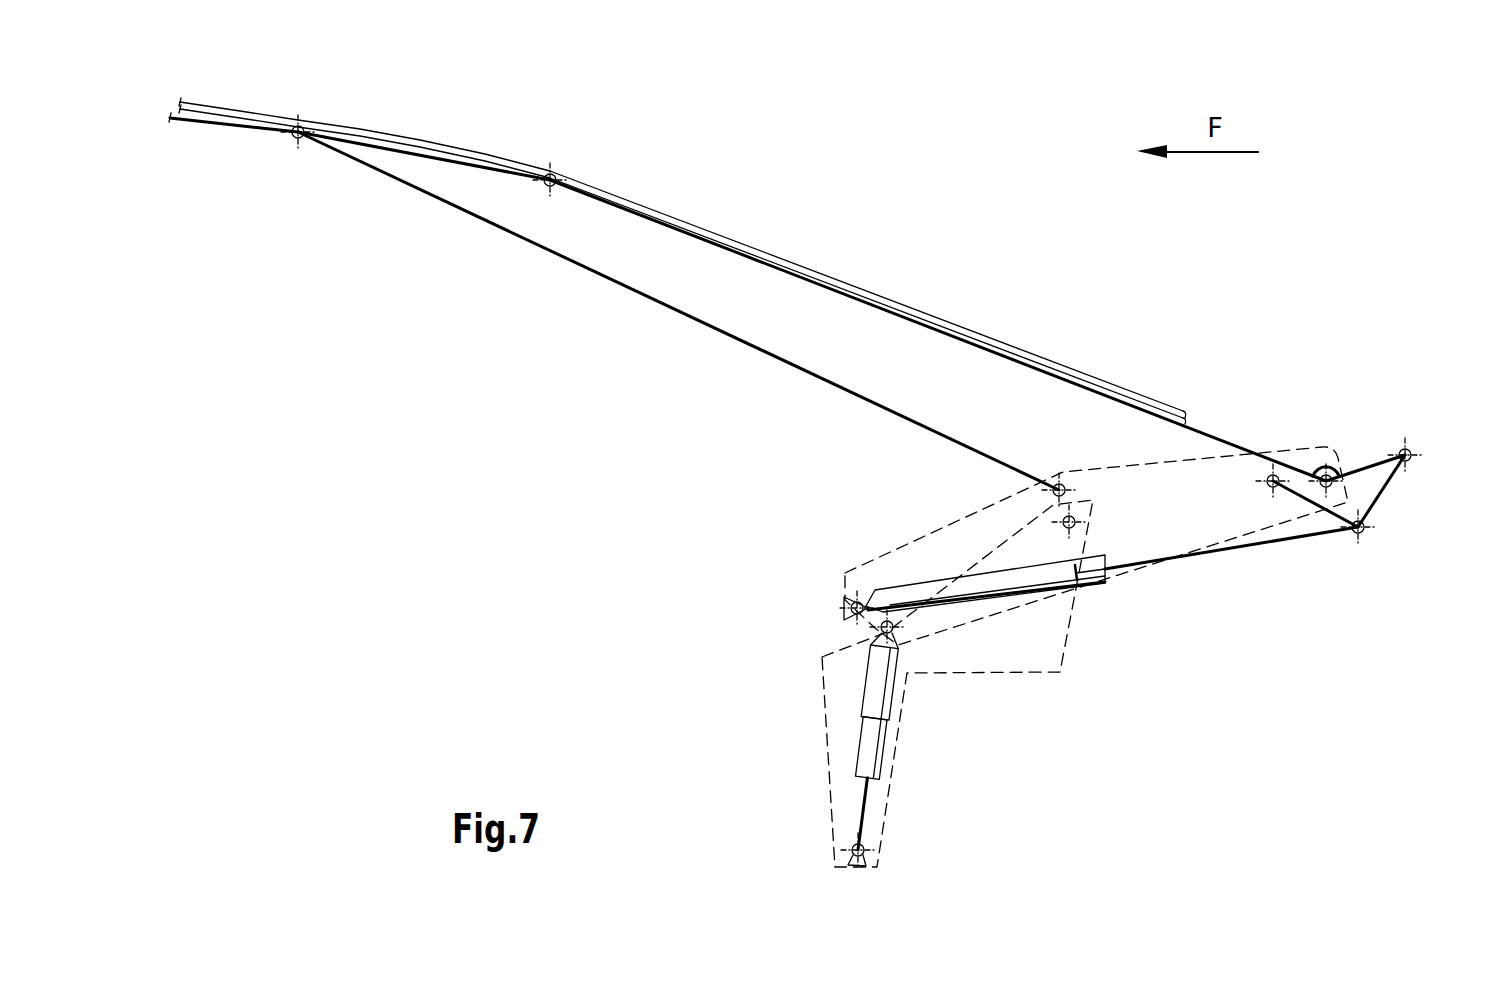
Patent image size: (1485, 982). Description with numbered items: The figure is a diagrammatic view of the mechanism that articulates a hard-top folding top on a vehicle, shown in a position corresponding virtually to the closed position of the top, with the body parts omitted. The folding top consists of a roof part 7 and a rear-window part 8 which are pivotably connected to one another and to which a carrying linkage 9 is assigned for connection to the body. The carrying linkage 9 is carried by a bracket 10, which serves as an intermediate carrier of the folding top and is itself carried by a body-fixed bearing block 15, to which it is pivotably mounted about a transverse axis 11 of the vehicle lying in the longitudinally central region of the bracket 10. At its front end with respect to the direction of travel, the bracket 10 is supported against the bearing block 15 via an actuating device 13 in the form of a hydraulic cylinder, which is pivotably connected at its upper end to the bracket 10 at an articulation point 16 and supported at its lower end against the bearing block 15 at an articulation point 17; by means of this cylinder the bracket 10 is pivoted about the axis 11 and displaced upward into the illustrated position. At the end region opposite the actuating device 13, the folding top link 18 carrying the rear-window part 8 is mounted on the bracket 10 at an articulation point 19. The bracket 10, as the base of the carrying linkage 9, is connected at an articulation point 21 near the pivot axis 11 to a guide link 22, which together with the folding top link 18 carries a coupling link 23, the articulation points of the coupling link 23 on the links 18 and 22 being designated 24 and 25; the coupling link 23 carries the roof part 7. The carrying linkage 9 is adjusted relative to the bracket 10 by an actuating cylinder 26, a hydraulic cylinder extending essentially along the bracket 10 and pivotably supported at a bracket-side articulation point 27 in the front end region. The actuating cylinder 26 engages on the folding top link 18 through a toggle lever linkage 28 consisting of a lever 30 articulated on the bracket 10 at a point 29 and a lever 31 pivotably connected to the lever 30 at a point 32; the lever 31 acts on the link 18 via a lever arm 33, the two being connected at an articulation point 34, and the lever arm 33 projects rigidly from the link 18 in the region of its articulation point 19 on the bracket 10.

The roof part 7 is at (380, 124).
The rear-window part 8 is at (796, 262).
The carrying linkage 9 is at (572, 303).
The bracket 10 is at (906, 547).
The transverse axis 11 is at (1076, 521).
The actuating device 13 is at (912, 715).
The bearing block 15 is at (1062, 673).
The articulation point 16 is at (880, 627).
The articulation point 17 is at (852, 852).
The folding top link 18 is at (1193, 430).
The articulation point 19 is at (1330, 476).
The articulation point 21 is at (1056, 484).
The guide link 22 is at (789, 360).
The coupling link 23 is at (497, 178).
The articulation point 24 is at (553, 173).
The articulation point 25 is at (296, 139).
The actuating cylinder 26 is at (1112, 605).
The articulation point 27 is at (851, 608).
The toggle lever linkage 28 is at (1333, 495).
The articulation point 29 is at (1270, 476).
The lever 30 is at (1296, 495).
The lever 31 is at (1390, 481).
The articulation point 32 is at (1356, 534).
The lever arm 33 is at (1368, 466).
The articulation point 34 is at (1411, 451).